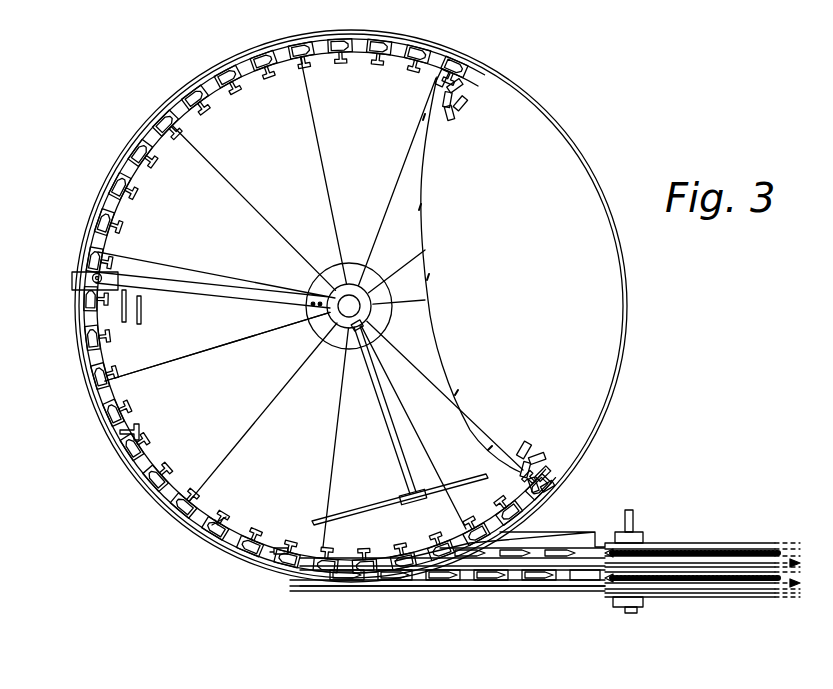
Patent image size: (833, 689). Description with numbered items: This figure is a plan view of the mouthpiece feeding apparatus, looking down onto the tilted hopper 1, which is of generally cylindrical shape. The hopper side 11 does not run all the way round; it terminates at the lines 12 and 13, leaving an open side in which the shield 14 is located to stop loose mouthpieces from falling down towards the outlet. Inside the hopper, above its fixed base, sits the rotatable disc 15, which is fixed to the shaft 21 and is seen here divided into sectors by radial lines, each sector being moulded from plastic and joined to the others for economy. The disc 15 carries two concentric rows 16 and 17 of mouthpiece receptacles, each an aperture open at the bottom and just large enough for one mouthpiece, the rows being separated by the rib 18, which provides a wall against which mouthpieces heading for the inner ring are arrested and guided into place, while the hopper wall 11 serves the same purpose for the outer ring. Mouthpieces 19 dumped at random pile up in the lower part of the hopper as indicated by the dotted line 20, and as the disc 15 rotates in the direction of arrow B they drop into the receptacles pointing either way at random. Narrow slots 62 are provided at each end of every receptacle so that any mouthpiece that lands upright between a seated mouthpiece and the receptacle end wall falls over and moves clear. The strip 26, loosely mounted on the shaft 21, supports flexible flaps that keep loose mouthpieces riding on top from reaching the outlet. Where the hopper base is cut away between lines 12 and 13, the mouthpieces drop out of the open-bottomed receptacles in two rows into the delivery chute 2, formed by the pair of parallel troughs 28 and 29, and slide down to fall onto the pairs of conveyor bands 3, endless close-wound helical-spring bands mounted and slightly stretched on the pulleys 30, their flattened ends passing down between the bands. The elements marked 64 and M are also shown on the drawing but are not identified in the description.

The hopper 1 is at (584, 142).
The delivery chute 2 is at (398, 597).
The conveyor bands 3 is at (722, 562).
The hopper side 11 is at (627, 313).
The termination line of hopper side 12 is at (452, 492).
The termination line of hopper side 13 is at (303, 586).
The shield 14 is at (348, 517).
The rotatable disc 15 is at (250, 401).
The row of mouthpiece receptacles 16 is at (178, 477).
The row of mouthpiece receptacles 17 is at (143, 492).
The rib 18 is at (275, 547).
The mouthpieces 19 is at (462, 88).
The dotted line 20 is at (442, 345).
The shaft 21 is at (348, 310).
The strip 26 is at (255, 296).
The trough 28 is at (556, 550).
The trough 29 is at (432, 583).
The pulleys 30 is at (610, 593).
The narrow slots 62 is at (141, 431).
The spoke 64 is at (206, 335).
The direction of rotation arrow B is at (116, 303).
The mandrel M is at (232, 525).